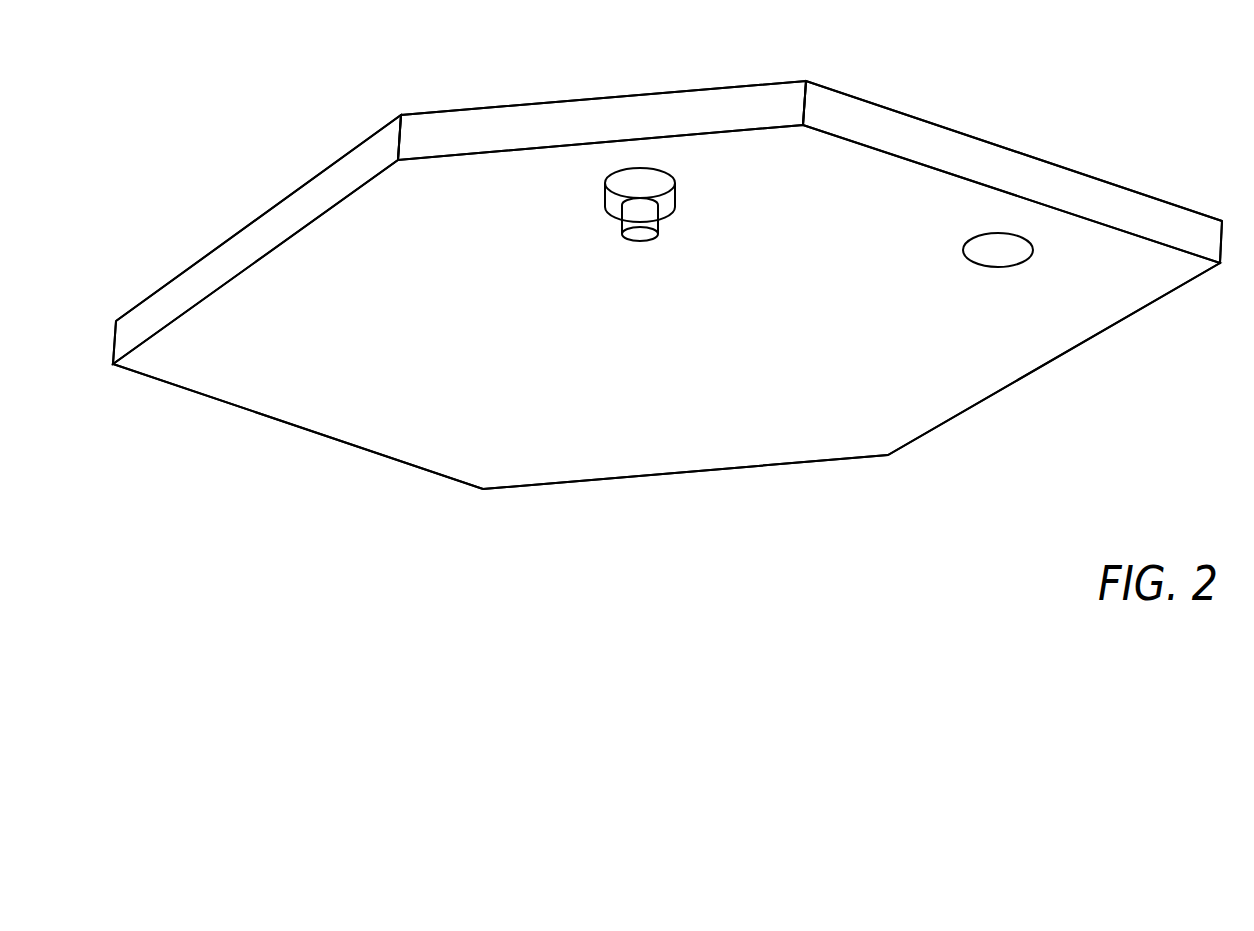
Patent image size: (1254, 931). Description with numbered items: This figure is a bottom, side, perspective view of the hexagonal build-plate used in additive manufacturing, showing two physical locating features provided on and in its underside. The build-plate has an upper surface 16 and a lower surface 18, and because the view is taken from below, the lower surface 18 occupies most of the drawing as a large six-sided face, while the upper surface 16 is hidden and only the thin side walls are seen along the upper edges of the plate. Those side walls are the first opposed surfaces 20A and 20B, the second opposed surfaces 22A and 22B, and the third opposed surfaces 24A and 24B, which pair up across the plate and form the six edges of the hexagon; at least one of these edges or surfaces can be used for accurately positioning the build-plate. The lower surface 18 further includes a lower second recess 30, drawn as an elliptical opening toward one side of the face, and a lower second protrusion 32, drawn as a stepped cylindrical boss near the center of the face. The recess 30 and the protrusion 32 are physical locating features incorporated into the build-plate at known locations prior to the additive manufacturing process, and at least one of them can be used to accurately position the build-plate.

The upper surface 16 is at (477, 108).
The lower surface 18 is at (347, 422).
The first opposed surface 20A is at (1072, 350).
The first opposed surface 20B is at (278, 227).
The second opposed surface 22A is at (1045, 175).
The second opposed surface 22B is at (245, 408).
The third opposed surface 24A is at (572, 130).
The third opposed surface 24B is at (678, 473).
The lower second recess 30 is at (1005, 243).
The lower second protrusion 32 is at (640, 240).